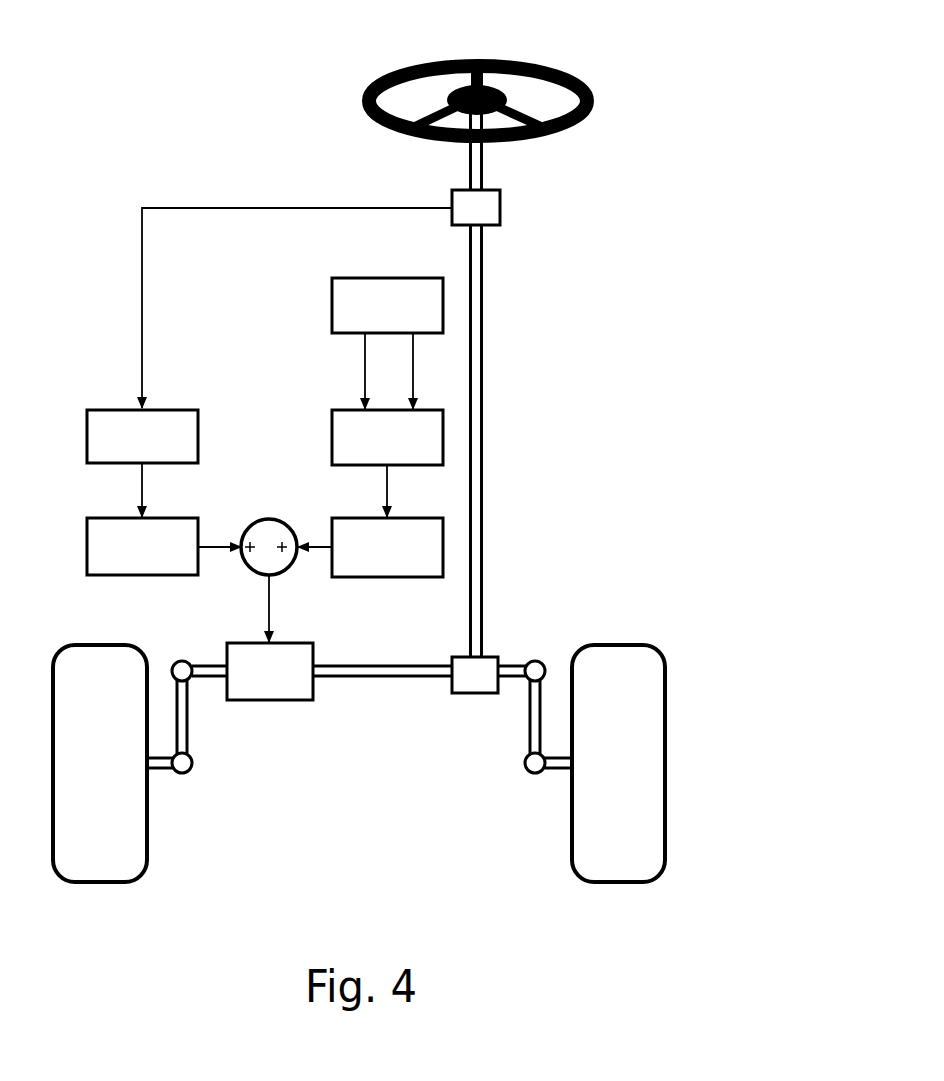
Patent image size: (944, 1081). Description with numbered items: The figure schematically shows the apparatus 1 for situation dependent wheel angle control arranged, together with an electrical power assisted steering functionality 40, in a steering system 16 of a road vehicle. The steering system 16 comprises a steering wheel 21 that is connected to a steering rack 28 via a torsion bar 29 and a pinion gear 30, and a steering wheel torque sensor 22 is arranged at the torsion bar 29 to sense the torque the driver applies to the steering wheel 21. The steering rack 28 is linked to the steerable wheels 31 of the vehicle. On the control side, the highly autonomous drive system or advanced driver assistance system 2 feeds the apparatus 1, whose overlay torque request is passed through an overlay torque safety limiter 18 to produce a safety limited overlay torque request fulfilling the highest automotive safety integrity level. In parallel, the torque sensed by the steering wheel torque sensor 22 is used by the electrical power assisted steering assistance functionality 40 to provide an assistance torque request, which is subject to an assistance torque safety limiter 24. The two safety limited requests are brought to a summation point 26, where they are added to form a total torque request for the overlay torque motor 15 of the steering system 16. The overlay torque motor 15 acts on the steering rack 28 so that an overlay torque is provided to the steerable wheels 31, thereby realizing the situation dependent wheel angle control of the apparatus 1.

The steering wheel 21 is at (518, 60).
The steering wheel torque sensor 22 is at (487, 212).
The torsion bar 29 is at (475, 310).
The steering system 16 is at (511, 476).
The highly autonomous drive system 2 is at (379, 319).
The apparatus 1 is at (379, 451).
The overlay torque safety limiter 18 is at (373, 561).
The electrical power assisted steering assistance functionality 40 is at (128, 450).
The assistance torque safety limiter 24 is at (128, 560).
The summation point 26 is at (265, 560).
The overlay torque motor 15 is at (256, 685).
The steering rack 28 is at (380, 674).
The pinion gear 30 is at (470, 673).
The steerable wheels 31 is at (86, 778).